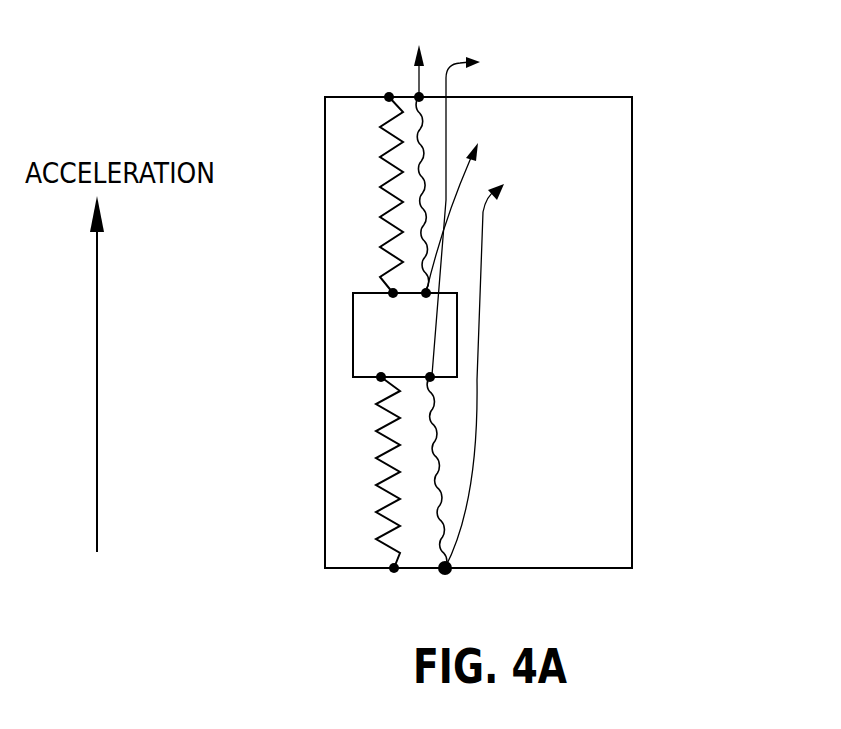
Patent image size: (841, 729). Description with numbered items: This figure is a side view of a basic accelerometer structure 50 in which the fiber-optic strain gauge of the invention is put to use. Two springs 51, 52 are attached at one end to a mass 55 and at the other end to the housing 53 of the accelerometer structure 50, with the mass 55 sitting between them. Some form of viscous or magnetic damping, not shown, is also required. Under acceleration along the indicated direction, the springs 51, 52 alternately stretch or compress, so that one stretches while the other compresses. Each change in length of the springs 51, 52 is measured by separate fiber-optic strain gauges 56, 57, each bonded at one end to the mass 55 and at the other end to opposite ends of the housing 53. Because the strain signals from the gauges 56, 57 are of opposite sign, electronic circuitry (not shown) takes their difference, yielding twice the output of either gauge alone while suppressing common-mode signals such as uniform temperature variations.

The accelerometer structure 50 is at (618, 58).
The spring 51 is at (372, 212).
The spring 52 is at (372, 442).
The housing 53 is at (645, 273).
The mass 55 is at (353, 337).
The fiber-optic strain gauge 56 is at (462, 113).
The fiber-optic strain gauge 57 is at (485, 464).